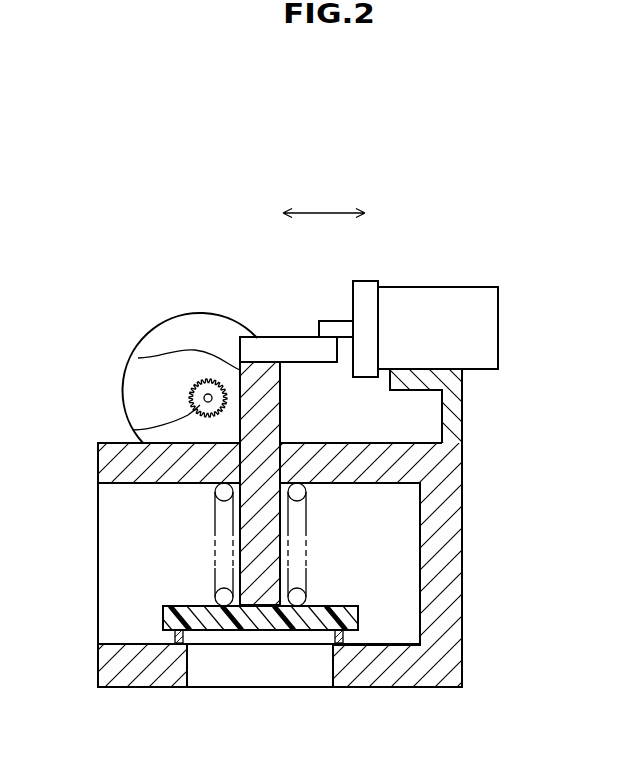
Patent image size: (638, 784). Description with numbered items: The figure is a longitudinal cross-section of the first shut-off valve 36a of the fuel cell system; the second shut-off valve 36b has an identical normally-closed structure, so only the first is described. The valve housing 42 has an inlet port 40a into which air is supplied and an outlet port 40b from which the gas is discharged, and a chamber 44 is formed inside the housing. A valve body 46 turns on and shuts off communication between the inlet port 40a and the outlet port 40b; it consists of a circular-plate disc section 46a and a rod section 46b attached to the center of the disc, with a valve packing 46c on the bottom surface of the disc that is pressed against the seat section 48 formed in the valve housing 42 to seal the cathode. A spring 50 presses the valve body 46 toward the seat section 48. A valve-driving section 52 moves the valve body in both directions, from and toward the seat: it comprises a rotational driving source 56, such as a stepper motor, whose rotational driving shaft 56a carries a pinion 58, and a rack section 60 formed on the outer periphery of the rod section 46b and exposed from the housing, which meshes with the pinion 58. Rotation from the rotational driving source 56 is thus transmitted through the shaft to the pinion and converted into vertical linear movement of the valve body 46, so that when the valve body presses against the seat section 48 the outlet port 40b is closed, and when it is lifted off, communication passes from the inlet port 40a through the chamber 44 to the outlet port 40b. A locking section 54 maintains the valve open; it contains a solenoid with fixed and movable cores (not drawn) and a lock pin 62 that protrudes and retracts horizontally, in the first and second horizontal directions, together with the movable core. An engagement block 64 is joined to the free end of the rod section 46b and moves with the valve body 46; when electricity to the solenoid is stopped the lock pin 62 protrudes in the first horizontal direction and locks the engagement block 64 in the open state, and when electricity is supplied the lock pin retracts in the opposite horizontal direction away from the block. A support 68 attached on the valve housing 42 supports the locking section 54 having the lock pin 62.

The first shut-off valve 36a is at (432, 155).
The second shut-off valve 36b is at (297, 469).
The inlet port 40a is at (128, 642).
The outlet port 40b is at (333, 662).
The valve housing 42 is at (462, 552).
The chamber 44 is at (259, 563).
The valve body 46 is at (327, 605).
The disc section 46a is at (358, 612).
The valve packing 46c is at (343, 634).
The rod section 46b is at (247, 528).
The seat section 48 is at (180, 645).
The spring 50 is at (297, 492).
The valve-driving section 52 is at (177, 322).
The locking section 54 is at (499, 328).
The rotational driving source 56 is at (160, 338).
The rotational driving shaft 56a is at (133, 430).
The pinion 58 is at (193, 392).
The rack section 60 is at (138, 358).
The lock pin 62 is at (337, 321).
The engagement block 64 is at (320, 337).
The support 68 is at (462, 400).